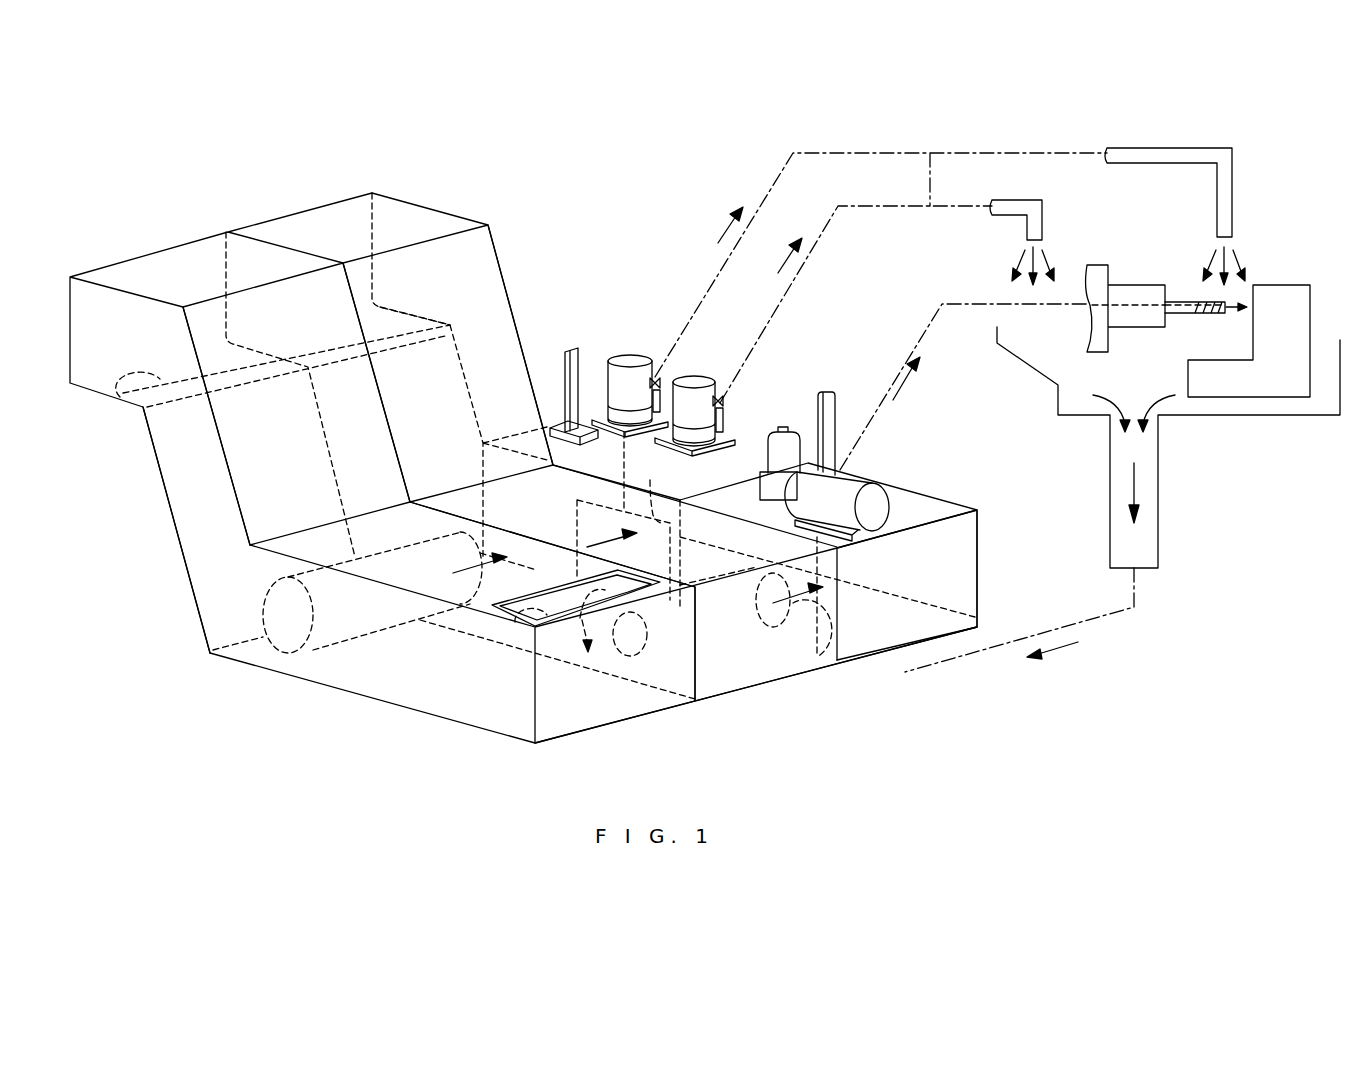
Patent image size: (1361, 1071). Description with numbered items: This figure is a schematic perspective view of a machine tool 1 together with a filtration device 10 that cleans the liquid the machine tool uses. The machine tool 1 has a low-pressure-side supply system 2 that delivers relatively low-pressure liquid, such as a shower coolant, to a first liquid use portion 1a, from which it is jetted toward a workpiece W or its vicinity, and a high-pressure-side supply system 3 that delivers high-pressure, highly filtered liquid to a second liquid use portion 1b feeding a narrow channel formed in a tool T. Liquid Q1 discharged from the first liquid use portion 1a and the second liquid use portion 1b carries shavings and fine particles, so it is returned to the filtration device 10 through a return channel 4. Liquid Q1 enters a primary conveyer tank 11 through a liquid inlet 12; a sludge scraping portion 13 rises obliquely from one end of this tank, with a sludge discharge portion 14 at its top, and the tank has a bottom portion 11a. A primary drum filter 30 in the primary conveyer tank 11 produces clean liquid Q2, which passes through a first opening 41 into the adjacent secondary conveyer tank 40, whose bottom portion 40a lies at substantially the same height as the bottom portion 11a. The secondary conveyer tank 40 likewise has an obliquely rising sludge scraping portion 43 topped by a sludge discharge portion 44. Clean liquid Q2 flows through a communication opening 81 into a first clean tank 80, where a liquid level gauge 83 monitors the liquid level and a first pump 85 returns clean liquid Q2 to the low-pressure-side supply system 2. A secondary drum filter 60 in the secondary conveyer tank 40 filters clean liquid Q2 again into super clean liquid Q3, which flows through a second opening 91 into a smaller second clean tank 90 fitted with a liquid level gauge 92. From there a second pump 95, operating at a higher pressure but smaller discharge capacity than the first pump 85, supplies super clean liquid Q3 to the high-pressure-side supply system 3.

The machine tool 1 is at (1296, 174).
The first liquid use portion 1a is at (1042, 222).
The second liquid use portion 1b is at (1190, 313).
The low-pressure-side supply system 2 is at (930, 153).
The high-pressure-side supply system 3 is at (945, 302).
The return channel 4 is at (1068, 620).
The filtration device 10 is at (617, 178).
The primary conveyer tank 11 is at (390, 693).
The bottom portion 11a is at (577, 741).
The liquid inlet 12 is at (535, 610).
The sludge scraping portion 13 is at (185, 515).
The sludge discharge portion 14 is at (121, 398).
The primary drum filter 30 is at (333, 637).
The secondary conveyer tank 40 is at (730, 663).
The bottom portion 40a is at (770, 660).
The first opening 41 is at (480, 530).
The sludge scraping portion 43 is at (497, 315).
The sludge discharge portion 44 is at (387, 305).
The secondary drum filter 60 is at (673, 647).
The first clean tank 80 is at (750, 445).
The communication opening 81 is at (644, 477).
The liquid level gauge 83 is at (560, 380).
The first pump 85 is at (628, 357).
The second clean tank 90 is at (977, 565).
The second opening 91 is at (817, 660).
The liquid level gauge 92 is at (836, 412).
The second pump 95 is at (858, 478).
The tool T is at (1200, 302).
The workpiece W is at (1292, 285).
The liquid Q1 is at (465, 667).
The clean liquid Q2 is at (752, 458).
The super clean liquid Q3 is at (920, 498).